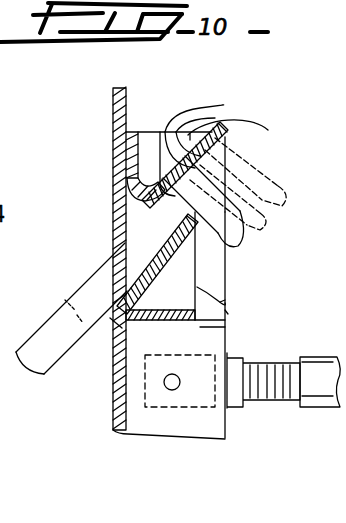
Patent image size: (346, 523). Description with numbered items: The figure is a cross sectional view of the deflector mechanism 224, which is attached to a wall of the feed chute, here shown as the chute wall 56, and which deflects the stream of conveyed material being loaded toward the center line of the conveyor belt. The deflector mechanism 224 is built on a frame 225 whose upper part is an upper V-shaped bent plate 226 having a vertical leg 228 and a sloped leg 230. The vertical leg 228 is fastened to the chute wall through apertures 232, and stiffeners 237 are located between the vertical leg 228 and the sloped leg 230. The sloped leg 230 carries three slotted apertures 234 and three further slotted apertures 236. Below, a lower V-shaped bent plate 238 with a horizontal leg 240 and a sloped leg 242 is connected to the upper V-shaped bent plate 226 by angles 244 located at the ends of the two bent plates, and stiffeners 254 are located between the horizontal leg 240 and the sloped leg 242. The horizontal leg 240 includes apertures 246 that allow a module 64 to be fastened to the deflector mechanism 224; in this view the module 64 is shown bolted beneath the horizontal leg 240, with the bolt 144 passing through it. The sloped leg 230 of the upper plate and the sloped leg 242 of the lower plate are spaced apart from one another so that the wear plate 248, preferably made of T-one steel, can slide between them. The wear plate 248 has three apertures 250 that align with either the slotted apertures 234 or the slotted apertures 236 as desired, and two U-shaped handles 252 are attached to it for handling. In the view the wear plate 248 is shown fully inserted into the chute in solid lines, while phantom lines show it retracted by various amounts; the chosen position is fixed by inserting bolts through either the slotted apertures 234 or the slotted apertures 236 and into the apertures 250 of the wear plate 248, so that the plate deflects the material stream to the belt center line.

The rear wall 56 is at (113, 103).
The vertical leg 228 is at (148, 132).
The apertures 232 is at (113, 146).
The stiffeners 237 is at (113, 182).
The slotted apertures 234 is at (165, 132).
The slotted apertures 236 is at (187, 124).
The sloped leg 230 is at (185, 130).
The deflector mechanism 224 is at (285, 103).
The upper V-shaped bent plate 226 is at (268, 130).
The apertures 250 is at (125, 243).
The wear plate 248 is at (93, 272).
The U-shaped handles 252 is at (233, 253).
The stiffeners 254 is at (140, 302).
The apertures 246 is at (150, 320).
The horizontal leg 240 is at (232, 317).
The sloped leg 242 is at (230, 283).
The angles 244 is at (220, 302).
The frame 225 is at (228, 312).
The lower V-shaped bent plate 238 is at (110, 320).
The module 64 is at (227, 354).
The bolt head 144 is at (320, 407).